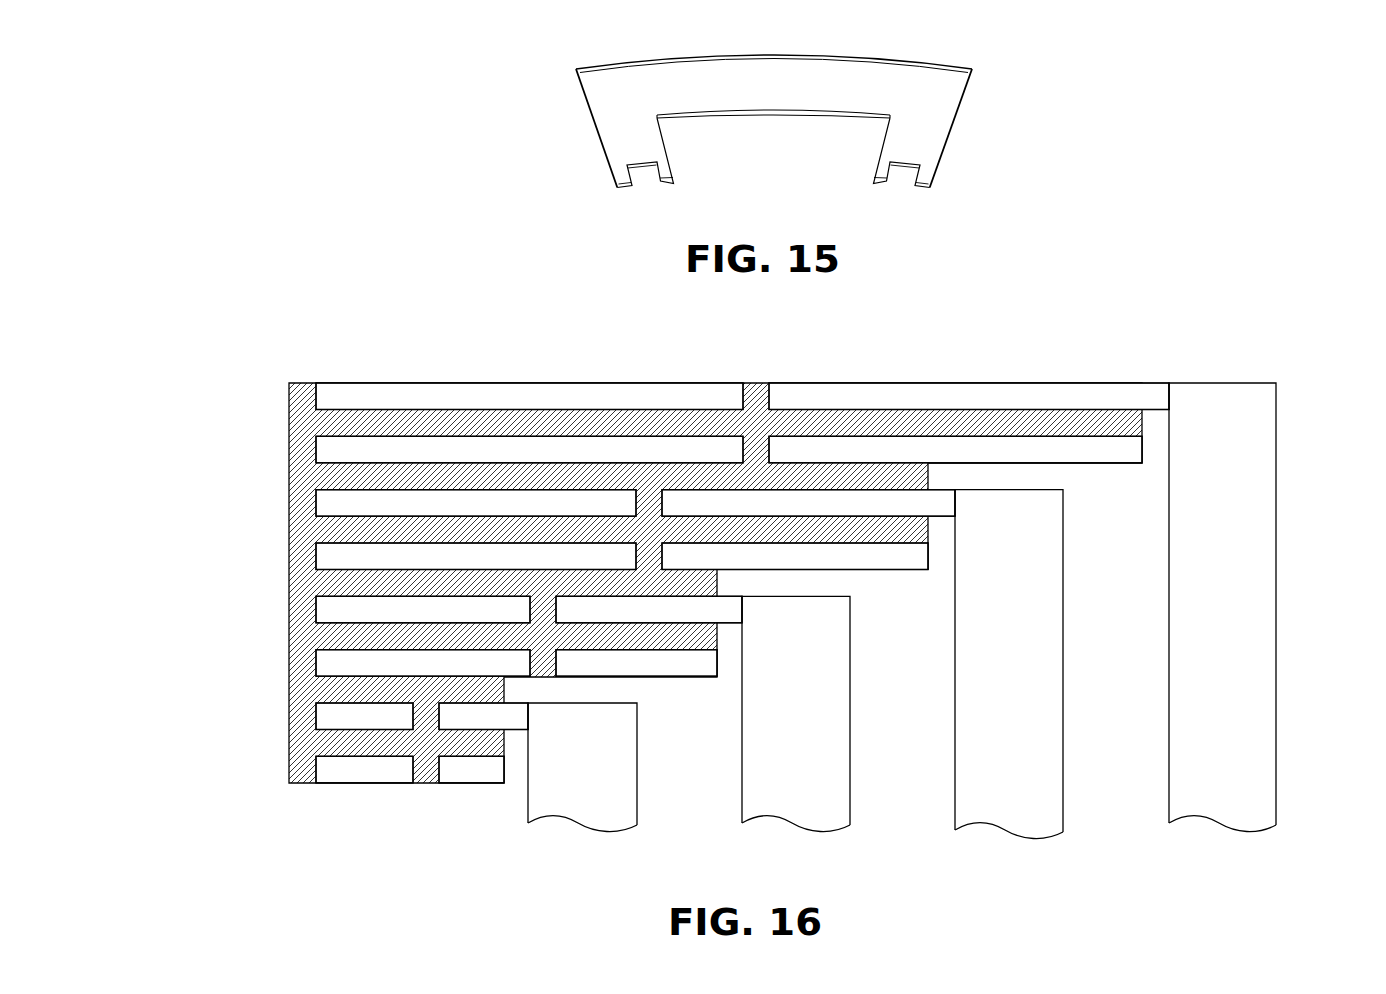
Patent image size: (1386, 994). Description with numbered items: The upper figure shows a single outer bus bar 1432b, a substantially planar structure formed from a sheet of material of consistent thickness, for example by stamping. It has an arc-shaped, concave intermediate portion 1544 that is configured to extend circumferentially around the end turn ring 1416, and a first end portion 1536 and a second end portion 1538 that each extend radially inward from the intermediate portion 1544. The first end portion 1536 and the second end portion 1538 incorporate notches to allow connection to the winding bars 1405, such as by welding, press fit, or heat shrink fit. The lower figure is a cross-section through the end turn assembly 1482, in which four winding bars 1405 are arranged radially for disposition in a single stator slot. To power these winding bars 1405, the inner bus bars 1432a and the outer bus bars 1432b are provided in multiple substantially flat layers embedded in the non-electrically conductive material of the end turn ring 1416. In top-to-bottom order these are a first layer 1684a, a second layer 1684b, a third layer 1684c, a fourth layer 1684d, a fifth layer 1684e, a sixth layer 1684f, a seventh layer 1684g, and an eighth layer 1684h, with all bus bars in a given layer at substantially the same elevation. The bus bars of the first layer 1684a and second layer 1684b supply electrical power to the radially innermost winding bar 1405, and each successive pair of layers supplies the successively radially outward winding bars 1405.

In FIG. 15, the outer bus bar 1432b is at (747, 102).
In FIG. 16, the outer bus bar 1432b is at (490, 408).
In FIG. 15, the intermediate portion 1544 is at (765, 63).
In FIG. 15, the first end portion 1536 is at (612, 147).
In FIG. 15, the second end portion 1538 is at (936, 147).
In FIG. 16, the end turn assembly 1482 is at (751, 577).
In FIG. 16, the end turn ring 1416 is at (758, 382).
In FIG. 16, the first layer 1684a is at (272, 383).
In FIG. 16, the second layer 1684b is at (272, 436).
In FIG. 16, the third layer 1684c is at (272, 490).
In FIG. 16, the fourth layer 1684d is at (272, 543).
In FIG. 16, the fifth layer 1684e is at (272, 596).
In FIG. 16, the sixth layer 1684f is at (272, 650).
In FIG. 16, the seventh layer 1684g is at (272, 703).
In FIG. 16, the eighth layer 1684h is at (272, 756).
In FIG. 16, the inner bus bar 1432a is at (930, 408).
In FIG. 16, the winding bar 1405 is at (637, 796).